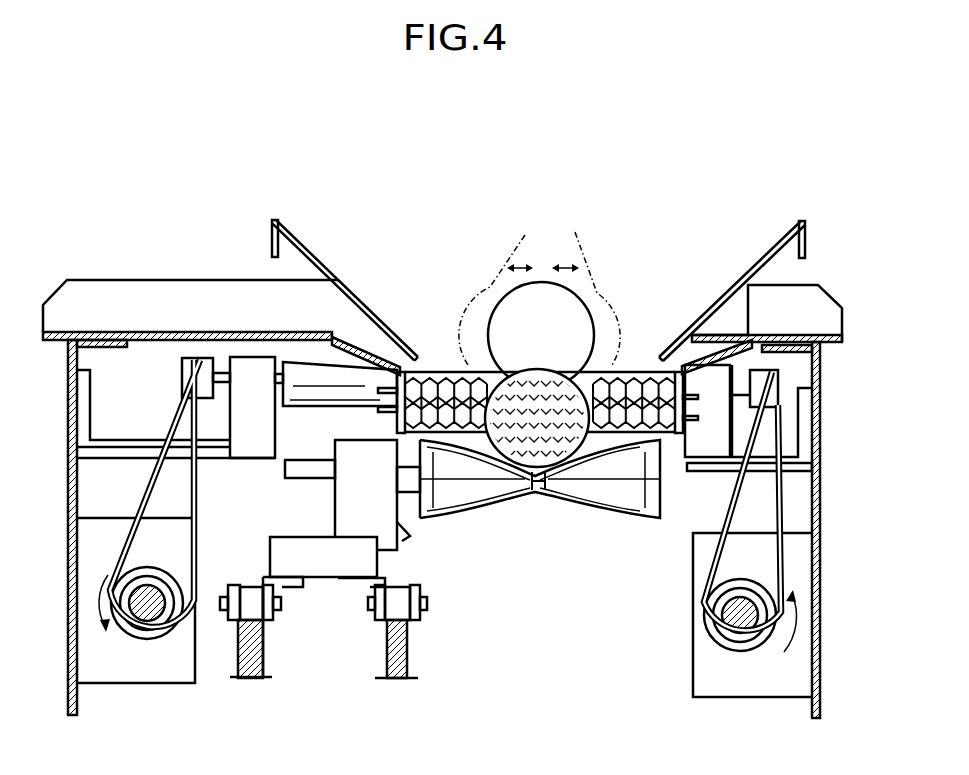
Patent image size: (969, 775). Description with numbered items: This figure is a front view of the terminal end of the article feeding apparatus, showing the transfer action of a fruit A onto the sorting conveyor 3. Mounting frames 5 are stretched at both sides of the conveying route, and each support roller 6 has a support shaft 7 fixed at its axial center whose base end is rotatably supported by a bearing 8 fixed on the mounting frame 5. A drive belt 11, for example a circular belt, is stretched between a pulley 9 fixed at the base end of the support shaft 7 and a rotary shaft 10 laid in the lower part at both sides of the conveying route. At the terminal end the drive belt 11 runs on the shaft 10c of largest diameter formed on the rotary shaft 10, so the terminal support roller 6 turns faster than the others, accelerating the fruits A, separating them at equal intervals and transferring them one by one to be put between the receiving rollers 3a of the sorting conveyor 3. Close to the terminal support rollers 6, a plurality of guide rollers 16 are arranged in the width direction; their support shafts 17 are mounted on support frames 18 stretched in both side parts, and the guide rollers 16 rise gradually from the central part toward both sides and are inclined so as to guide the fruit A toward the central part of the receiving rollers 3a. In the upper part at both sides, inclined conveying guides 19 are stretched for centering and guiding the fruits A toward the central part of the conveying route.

The sorting conveyor 3 is at (483, 531).
The receiving roller 3a is at (522, 482).
The mounting frame 5 is at (80, 400).
The support roller 6 is at (373, 378).
The support shaft 7 is at (222, 378).
The bearing 8 is at (248, 430).
The pulley 9 is at (182, 377).
The rotary shaft 10 is at (145, 620).
The shaft of largest diameter 10c is at (130, 572).
The drive belt 11 is at (150, 480).
The guide roller 16 is at (487, 380).
The support shaft 17 is at (387, 415).
The support frame 18 is at (378, 368).
The conveying guide 19 is at (327, 258).
The fruit A is at (538, 305).